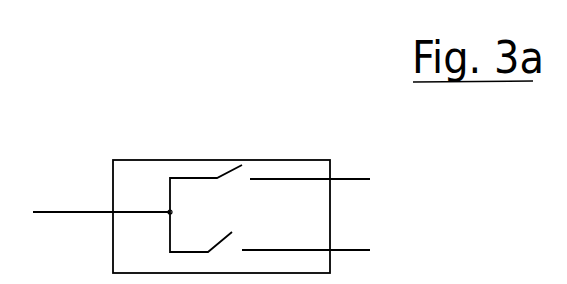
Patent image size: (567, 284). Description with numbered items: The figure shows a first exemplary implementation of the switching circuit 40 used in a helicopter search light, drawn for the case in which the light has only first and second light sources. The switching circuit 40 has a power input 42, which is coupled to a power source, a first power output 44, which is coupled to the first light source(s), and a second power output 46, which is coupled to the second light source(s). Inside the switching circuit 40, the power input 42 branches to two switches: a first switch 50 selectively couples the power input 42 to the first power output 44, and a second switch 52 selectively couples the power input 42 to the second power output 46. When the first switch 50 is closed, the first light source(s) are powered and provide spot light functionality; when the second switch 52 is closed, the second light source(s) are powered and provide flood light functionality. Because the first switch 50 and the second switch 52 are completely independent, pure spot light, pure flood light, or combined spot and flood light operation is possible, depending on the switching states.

The switching circuit 40 is at (170, 159).
The power input 42 is at (52, 211).
The first power output 44 is at (348, 178).
The second power output 46 is at (343, 250).
The first switch 50 is at (245, 163).
The second switch 52 is at (220, 236).